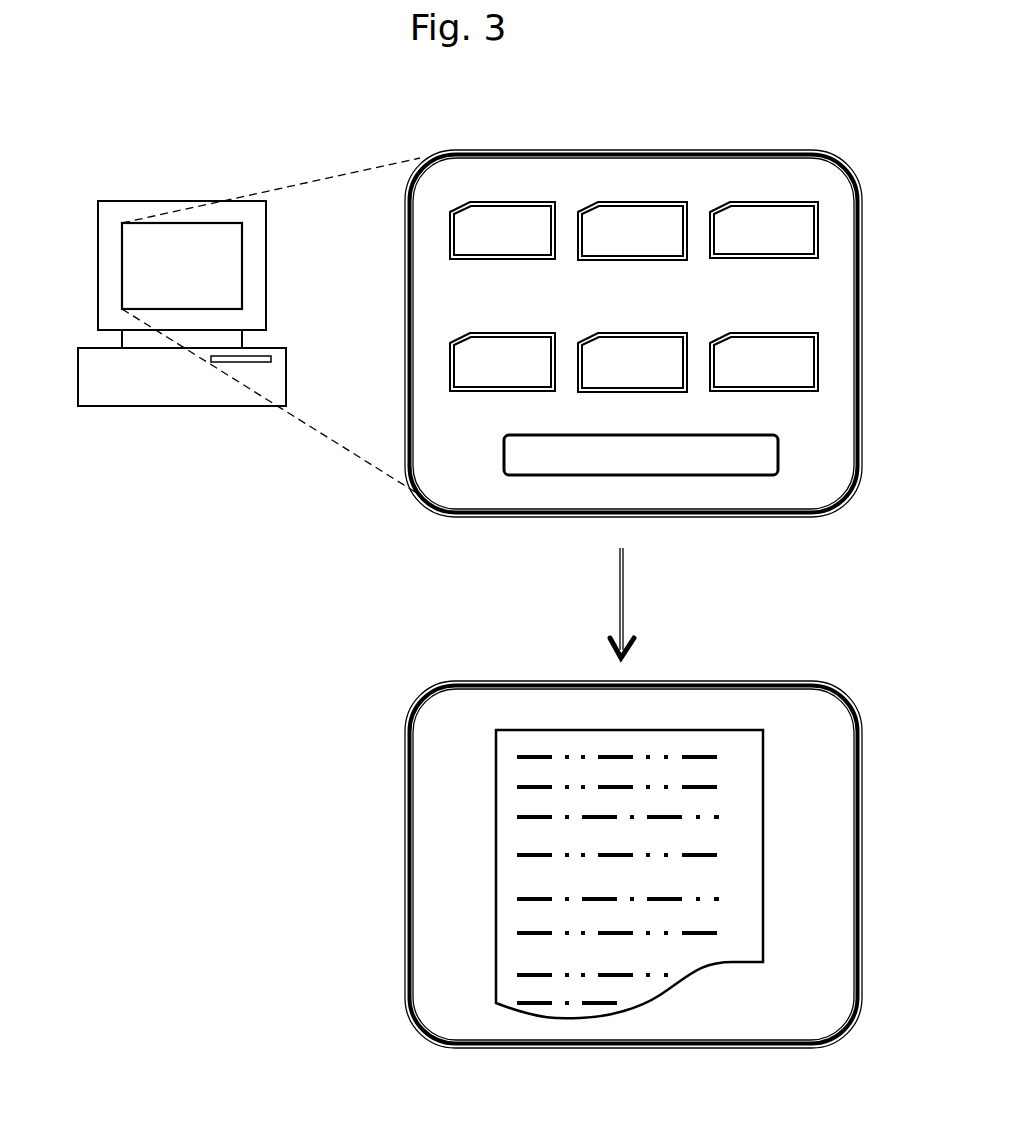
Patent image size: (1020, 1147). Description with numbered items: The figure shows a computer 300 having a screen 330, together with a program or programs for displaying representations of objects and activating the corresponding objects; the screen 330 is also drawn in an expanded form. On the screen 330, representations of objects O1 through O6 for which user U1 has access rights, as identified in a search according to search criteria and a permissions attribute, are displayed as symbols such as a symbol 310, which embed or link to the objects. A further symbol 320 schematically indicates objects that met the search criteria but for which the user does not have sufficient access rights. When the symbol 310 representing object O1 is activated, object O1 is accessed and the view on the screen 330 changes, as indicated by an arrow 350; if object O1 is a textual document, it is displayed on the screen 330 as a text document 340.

The computer 300 is at (176, 167).
The symbol 310 is at (507, 259).
The symbol 320 is at (780, 452).
The screen 330 is at (130, 257).
The text document 340 is at (712, 968).
The arrow 350 is at (624, 600).